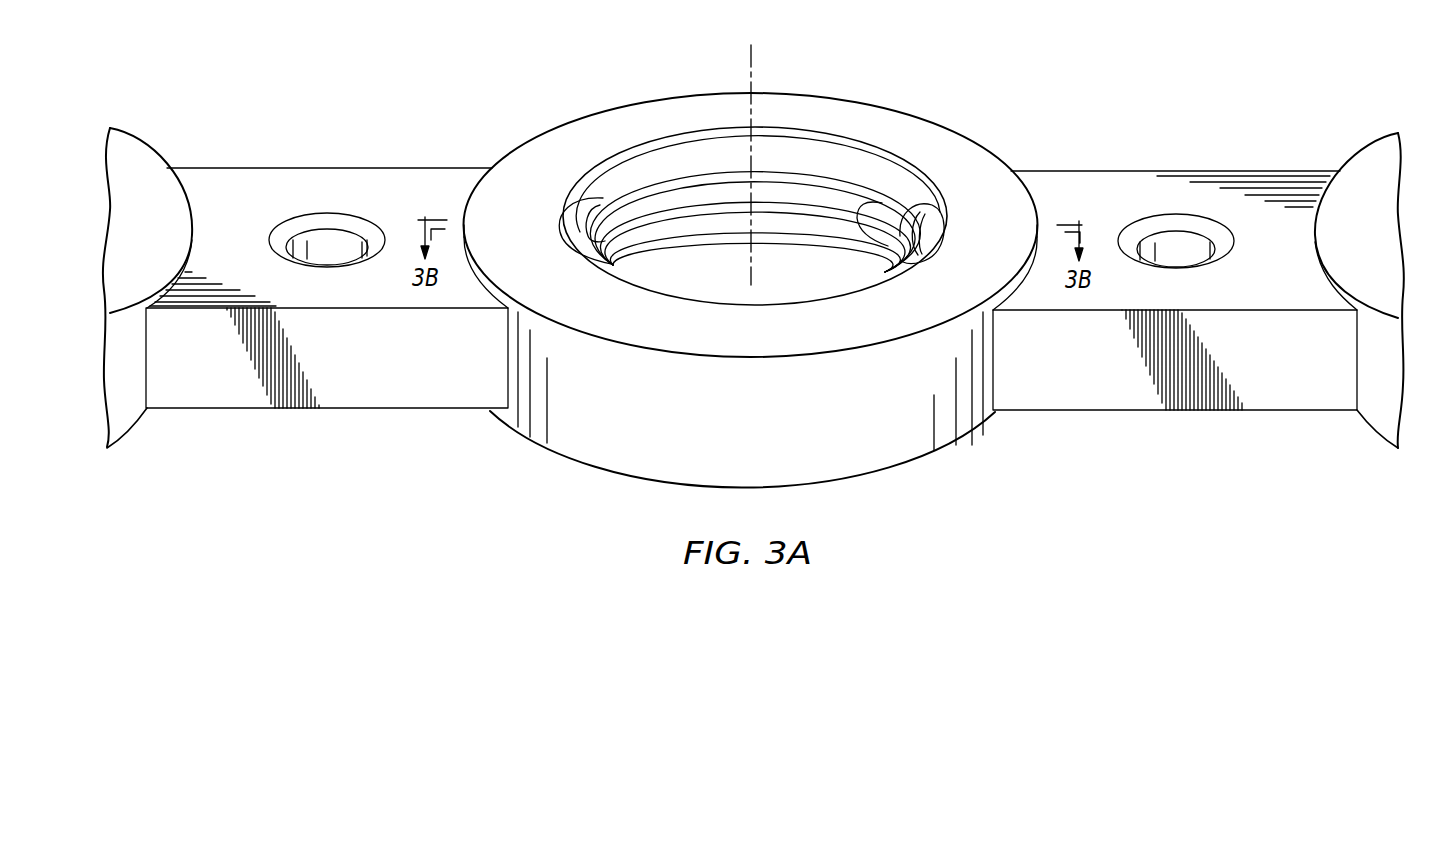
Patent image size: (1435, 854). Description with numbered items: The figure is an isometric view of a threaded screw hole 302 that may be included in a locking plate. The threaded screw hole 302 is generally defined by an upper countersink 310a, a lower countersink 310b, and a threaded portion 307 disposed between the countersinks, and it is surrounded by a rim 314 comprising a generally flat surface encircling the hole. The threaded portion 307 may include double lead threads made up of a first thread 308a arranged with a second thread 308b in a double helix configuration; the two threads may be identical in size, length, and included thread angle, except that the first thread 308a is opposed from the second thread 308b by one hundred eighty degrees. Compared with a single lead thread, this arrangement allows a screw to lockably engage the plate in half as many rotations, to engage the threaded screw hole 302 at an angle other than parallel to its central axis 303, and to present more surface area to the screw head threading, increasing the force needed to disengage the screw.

The threaded screw hole 302 is at (714, 288).
The central axis 303 is at (748, 58).
The threaded portion 307 is at (882, 203).
The first thread 308a is at (945, 206).
The second thread 308b is at (558, 200).
The upper countersink 310a is at (820, 163).
The lower countersink 310b is at (773, 243).
The rim 314 is at (544, 142).